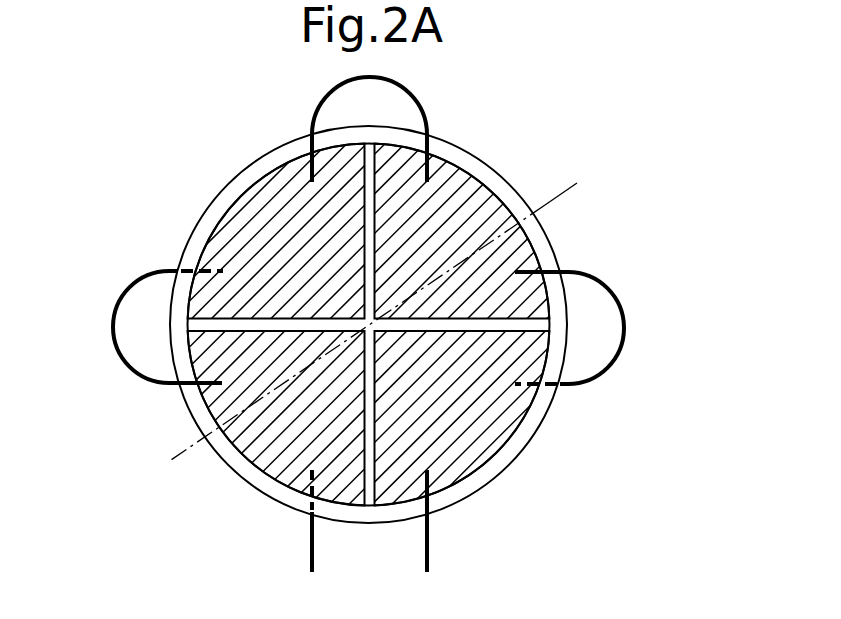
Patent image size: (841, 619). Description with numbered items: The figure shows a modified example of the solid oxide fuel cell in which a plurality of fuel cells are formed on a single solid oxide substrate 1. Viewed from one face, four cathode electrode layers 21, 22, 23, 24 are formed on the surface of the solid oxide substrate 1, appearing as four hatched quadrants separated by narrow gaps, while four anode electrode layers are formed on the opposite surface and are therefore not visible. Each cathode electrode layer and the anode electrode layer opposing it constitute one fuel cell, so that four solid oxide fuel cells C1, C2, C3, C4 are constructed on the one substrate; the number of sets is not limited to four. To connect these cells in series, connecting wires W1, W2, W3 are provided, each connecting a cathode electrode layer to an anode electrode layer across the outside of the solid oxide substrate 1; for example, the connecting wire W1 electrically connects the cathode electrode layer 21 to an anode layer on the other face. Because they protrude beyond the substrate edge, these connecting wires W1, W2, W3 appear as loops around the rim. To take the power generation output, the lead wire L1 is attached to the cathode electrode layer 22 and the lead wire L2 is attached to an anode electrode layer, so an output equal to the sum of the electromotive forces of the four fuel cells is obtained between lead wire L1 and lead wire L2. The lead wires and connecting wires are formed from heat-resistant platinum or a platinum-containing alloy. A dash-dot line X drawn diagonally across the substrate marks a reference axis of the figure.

The solid oxide substrate 1 is at (188, 243).
The cathode electrode layer 21 is at (523, 248).
The cathode electrode layer 22 is at (468, 468).
The cathode electrode layer 23 is at (290, 473).
The cathode electrode layer 24 is at (232, 224).
The connecting wire W1 is at (623, 325).
The connecting wire W2 is at (112, 320).
The connecting wire W3 is at (415, 82).
The lead wire L1 is at (426, 538).
The lead wire L2 is at (311, 538).
The solid oxide fuel cell C1 is at (508, 150).
The solid oxide fuel cell C2 is at (522, 463).
The solid oxide fuel cell C3 is at (228, 483).
The solid oxide fuel cell C4 is at (238, 158).
The axis line X is at (371, 327).